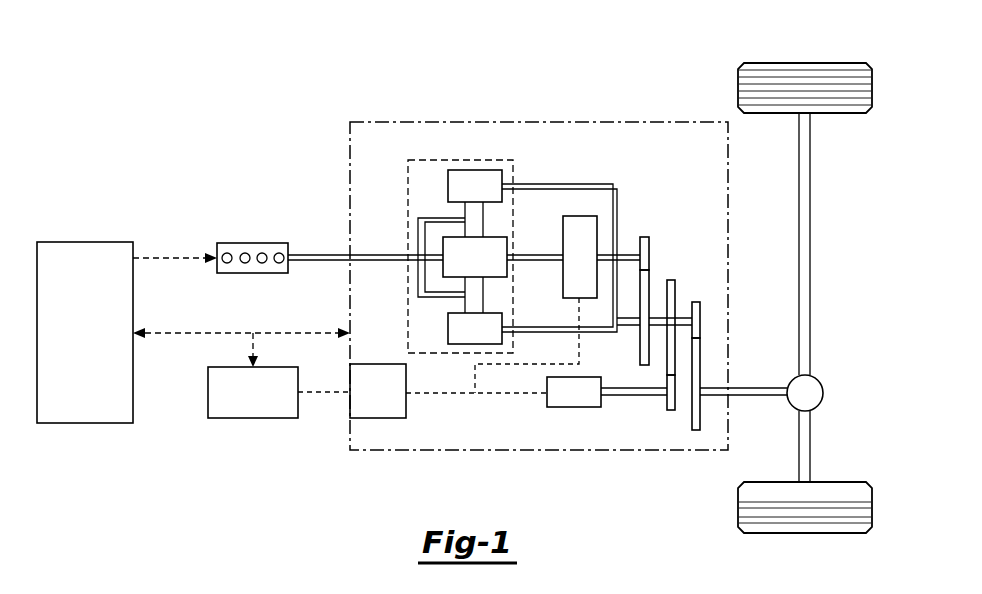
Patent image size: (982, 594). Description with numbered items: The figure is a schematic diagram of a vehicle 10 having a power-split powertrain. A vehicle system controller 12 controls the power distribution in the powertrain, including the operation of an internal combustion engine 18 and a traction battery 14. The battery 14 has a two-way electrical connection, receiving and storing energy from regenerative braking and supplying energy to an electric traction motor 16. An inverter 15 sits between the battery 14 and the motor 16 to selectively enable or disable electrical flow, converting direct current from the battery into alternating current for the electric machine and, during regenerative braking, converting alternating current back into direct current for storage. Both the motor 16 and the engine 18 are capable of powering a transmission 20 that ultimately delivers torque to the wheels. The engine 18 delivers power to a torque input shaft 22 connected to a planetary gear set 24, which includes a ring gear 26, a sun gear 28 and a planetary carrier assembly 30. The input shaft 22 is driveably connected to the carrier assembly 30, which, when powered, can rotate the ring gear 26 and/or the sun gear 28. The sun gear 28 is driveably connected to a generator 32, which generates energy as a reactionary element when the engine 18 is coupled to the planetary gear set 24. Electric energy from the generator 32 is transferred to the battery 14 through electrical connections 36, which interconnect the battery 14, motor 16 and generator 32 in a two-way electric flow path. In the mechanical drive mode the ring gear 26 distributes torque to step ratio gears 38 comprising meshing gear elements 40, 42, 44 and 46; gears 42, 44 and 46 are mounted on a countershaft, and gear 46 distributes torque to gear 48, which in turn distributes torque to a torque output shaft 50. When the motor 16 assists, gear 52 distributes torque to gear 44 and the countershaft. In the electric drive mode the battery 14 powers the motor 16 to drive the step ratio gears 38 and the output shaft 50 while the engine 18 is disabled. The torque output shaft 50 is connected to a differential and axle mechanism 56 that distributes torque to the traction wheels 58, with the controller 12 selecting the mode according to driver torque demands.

The vehicle 10 is at (288, 98).
The vehicle system controller 12 is at (86, 424).
The battery 14 is at (253, 419).
The inverter 15 is at (330, 415).
The electric traction motor 16 is at (574, 408).
The internal combustion engine 18 is at (217, 244).
The transmission 20 is at (642, 120).
The torque input shaft 22 is at (320, 253).
The planetary gear set 24 is at (513, 160).
The ring gear 26 is at (448, 187).
The sun gear 28 is at (500, 279).
The planetary carrier assembly 30 is at (418, 240).
The generator 32 is at (597, 226).
The electrical connections 36 is at (417, 402).
The step ratio gears 38 is at (718, 250).
The gear element 40 is at (649, 250).
The gear element 42 is at (640, 352).
The gear element 44 is at (675, 290).
The gear element 46 is at (700, 323).
The gear 48 is at (700, 362).
The torque output shaft 50 is at (752, 397).
The gear 52 is at (670, 411).
The differential and axle mechanism 56 is at (823, 393).
The traction wheels 58 is at (805, 63).